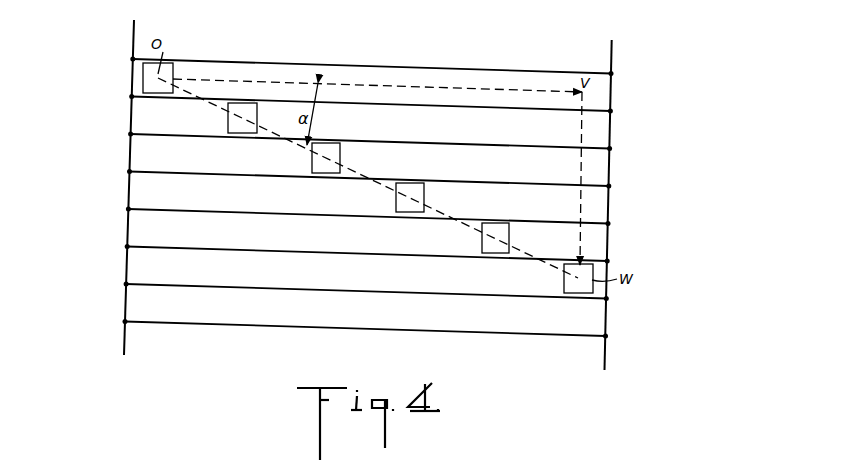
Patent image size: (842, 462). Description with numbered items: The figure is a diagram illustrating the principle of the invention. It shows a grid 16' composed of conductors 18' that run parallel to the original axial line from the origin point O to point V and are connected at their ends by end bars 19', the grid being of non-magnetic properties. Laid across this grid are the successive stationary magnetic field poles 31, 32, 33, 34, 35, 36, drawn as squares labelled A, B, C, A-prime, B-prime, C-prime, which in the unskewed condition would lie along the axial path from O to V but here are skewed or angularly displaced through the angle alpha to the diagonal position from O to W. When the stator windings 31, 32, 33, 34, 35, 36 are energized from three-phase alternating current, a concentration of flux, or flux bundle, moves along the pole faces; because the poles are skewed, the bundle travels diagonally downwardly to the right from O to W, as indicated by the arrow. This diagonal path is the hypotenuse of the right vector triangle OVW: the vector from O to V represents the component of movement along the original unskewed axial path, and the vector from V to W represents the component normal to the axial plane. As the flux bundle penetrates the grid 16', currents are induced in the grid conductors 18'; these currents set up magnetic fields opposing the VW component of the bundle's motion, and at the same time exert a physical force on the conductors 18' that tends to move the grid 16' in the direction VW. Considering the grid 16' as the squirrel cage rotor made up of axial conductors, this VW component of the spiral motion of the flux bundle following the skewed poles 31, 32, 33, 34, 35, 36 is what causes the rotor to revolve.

The grid 16' is at (347, 195).
The grid conductors 18' is at (342, 198).
The end bars 19' is at (368, 195).
The stator winding pole 31 is at (170, 65).
The stator winding pole 32 is at (252, 106).
The stator winding pole 33 is at (340, 150).
The stator winding pole 34 is at (423, 183).
The stator winding pole 35 is at (510, 222).
The stator winding pole 36 is at (587, 265).